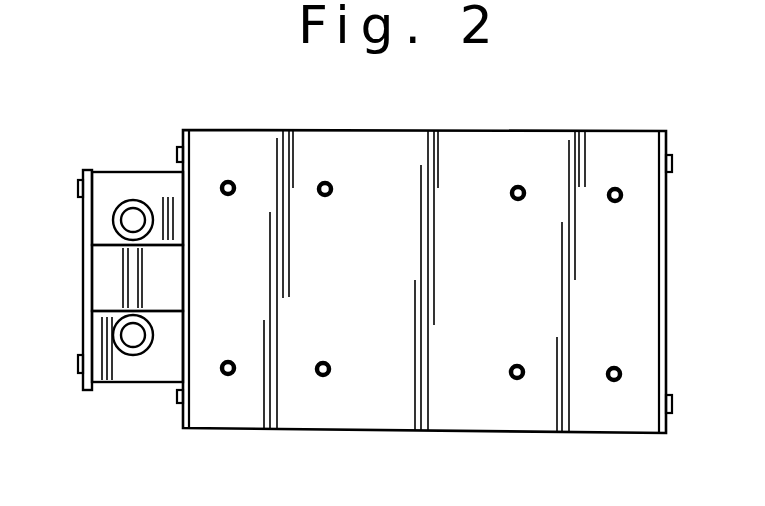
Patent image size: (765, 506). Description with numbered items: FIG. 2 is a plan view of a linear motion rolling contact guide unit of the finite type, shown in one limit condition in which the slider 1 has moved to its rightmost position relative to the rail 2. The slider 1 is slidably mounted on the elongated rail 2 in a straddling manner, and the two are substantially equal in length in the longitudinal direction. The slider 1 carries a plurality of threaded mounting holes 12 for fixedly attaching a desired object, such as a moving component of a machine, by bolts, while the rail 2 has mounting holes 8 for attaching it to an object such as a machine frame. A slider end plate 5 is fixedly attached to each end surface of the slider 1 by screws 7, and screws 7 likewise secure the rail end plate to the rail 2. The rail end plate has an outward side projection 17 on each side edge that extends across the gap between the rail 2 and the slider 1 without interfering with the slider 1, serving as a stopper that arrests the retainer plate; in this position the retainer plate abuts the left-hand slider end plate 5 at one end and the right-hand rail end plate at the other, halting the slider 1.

The slider 1 is at (350, 155).
The rail 2 is at (118, 185).
The slider end plate 5 is at (182, 193).
The screws 7 is at (79, 363).
The mounting holes 8 is at (133, 345).
The mounting holes 12 is at (231, 178).
The outward side projection 17 is at (84, 170).